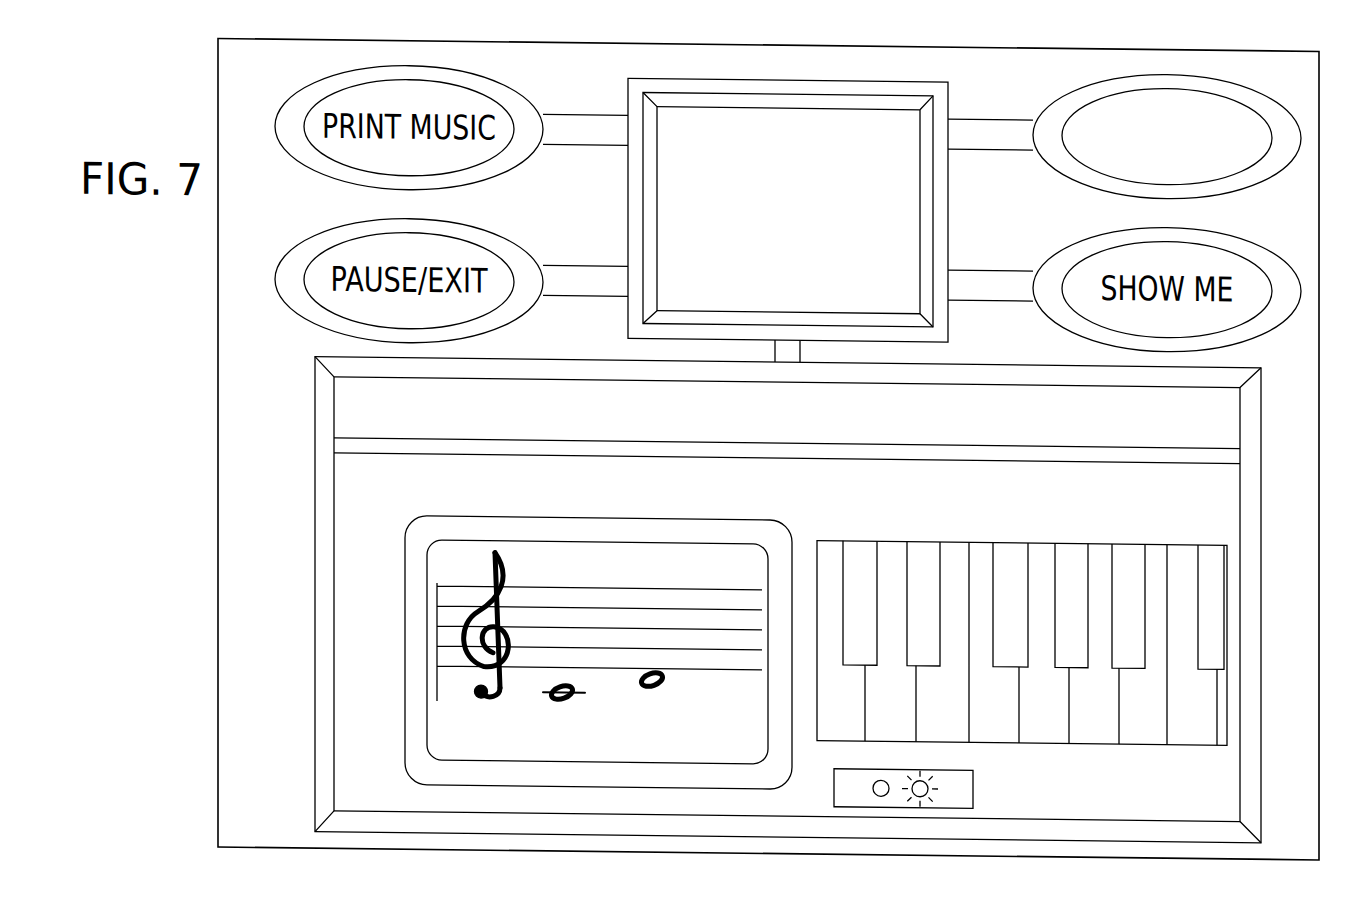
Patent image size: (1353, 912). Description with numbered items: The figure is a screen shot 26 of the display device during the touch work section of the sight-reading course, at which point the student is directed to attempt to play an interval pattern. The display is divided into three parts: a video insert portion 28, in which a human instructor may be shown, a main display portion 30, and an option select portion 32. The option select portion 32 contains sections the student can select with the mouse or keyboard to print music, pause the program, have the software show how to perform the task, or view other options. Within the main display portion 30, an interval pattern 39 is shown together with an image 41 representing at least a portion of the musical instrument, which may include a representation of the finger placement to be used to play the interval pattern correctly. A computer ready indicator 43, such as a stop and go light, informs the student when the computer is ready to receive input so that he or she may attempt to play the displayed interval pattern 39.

The screen shot 26 is at (208, 603).
The video insert portion 28 is at (837, 81).
The main display portion 30 is at (428, 830).
The option select portion 32 is at (1068, 74).
The interval pattern 39 is at (457, 564).
The image representing at least a portion of the musical instrument 41 is at (1152, 741).
The computer ready indicator 43 is at (950, 806).